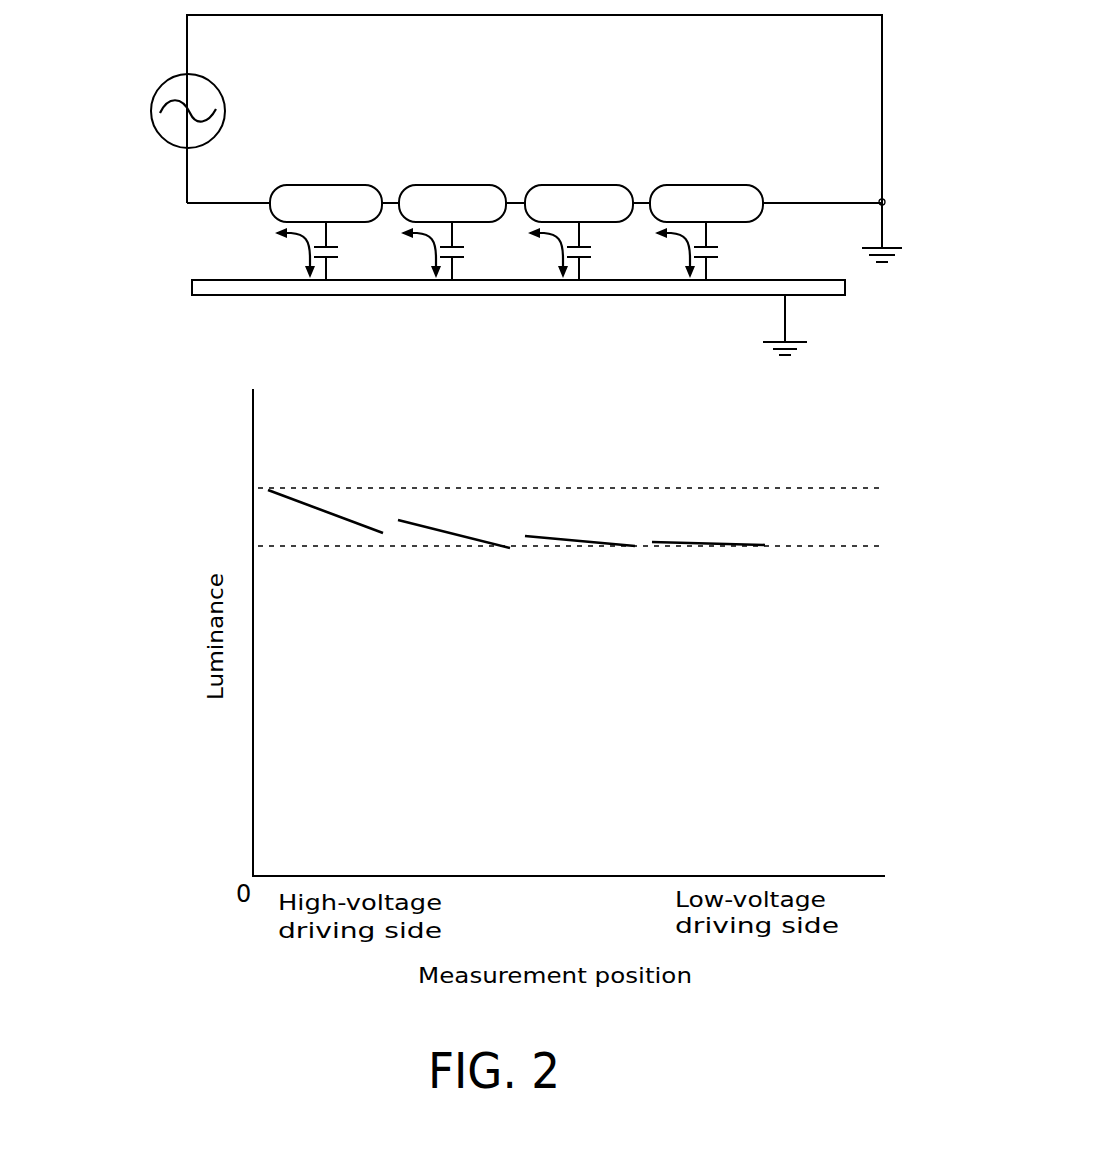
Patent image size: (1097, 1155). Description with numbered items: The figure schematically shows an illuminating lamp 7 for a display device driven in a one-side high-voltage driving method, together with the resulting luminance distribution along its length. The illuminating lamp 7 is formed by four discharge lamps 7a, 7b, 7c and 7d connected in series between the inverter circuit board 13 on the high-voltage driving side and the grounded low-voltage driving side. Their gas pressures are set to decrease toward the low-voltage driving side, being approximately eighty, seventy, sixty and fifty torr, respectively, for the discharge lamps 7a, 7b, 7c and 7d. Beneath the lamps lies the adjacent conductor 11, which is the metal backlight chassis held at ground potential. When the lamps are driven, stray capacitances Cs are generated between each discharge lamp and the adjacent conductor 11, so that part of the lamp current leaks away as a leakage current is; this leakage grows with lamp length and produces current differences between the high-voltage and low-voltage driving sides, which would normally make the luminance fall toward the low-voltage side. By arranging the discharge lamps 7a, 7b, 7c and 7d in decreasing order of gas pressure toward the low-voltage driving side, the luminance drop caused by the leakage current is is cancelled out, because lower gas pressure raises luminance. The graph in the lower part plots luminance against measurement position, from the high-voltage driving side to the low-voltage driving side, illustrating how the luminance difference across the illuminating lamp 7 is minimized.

The inverter circuit board 13 is at (151, 117).
The illuminating lamp 7 is at (534, 143).
The discharge lamp 7a is at (318, 184).
The discharge lamp 7b is at (445, 184).
The discharge lamp 7c is at (588, 184).
The discharge lamp 7d is at (714, 184).
The stray capacitance Cs is at (335, 262).
The leakage current is is at (305, 262).
The adjacent conductor 11 is at (191, 292).